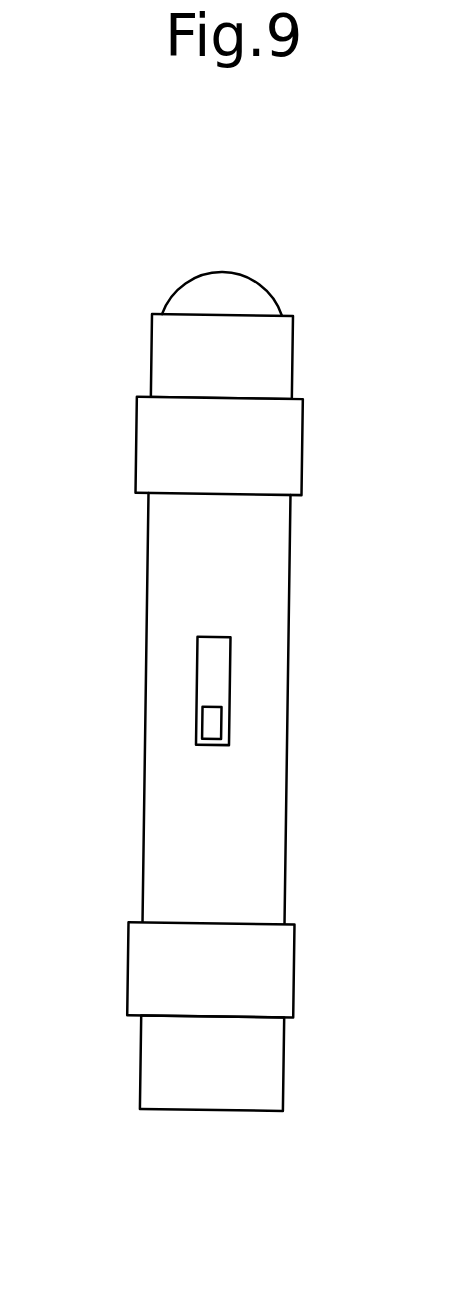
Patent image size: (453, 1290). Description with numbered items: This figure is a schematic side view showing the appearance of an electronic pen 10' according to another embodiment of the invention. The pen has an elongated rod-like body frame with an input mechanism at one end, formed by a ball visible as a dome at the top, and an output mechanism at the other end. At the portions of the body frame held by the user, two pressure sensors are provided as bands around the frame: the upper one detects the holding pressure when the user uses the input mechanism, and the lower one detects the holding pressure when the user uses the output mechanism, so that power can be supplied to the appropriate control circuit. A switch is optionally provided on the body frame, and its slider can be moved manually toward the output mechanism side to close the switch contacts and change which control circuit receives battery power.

The electronic pen 10' is at (385, 278).